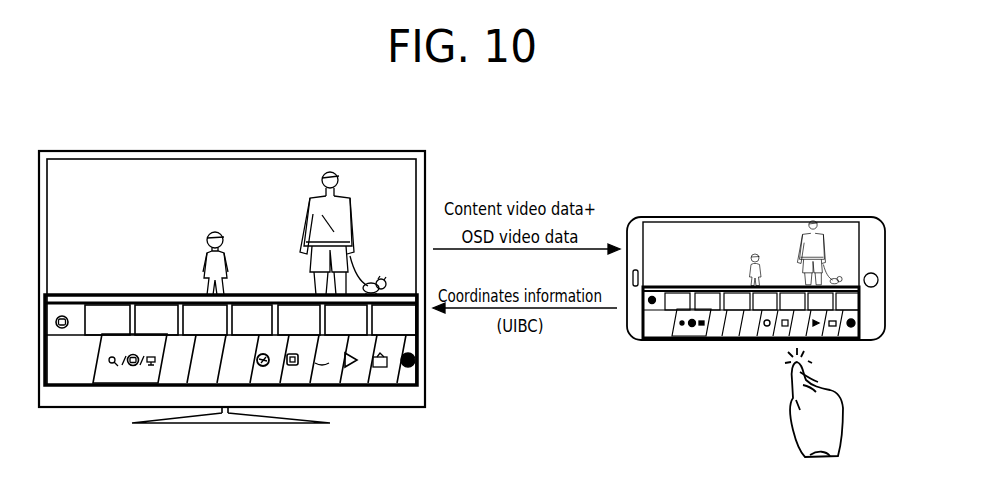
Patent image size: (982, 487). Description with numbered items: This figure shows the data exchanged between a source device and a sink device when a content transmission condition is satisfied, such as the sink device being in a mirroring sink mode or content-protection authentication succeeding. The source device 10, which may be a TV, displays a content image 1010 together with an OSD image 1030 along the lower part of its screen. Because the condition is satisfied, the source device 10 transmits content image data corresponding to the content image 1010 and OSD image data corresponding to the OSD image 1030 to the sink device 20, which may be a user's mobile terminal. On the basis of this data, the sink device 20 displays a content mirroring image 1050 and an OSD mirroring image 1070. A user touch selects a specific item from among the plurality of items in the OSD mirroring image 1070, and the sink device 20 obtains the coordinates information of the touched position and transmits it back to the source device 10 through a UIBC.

The source device 10 is at (233, 159).
The content image 1010 is at (388, 175).
The OSD image 1030 is at (417, 370).
The sink device 20 is at (737, 217).
The content mirroring image 1050 is at (842, 228).
The OSD mirroring image 1070 is at (640, 329).